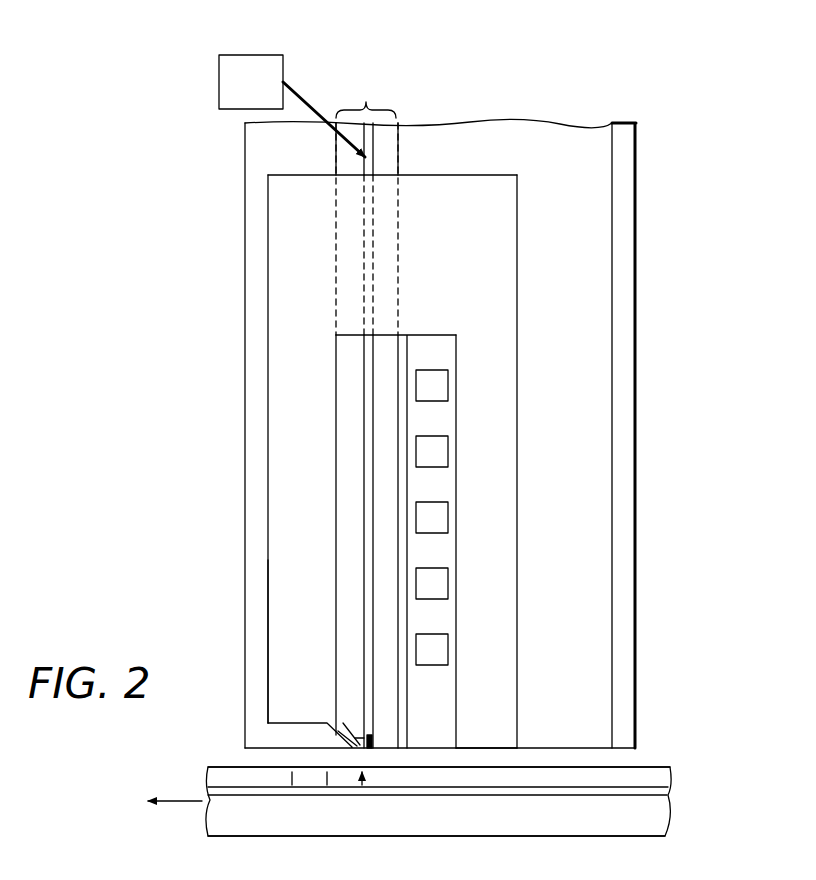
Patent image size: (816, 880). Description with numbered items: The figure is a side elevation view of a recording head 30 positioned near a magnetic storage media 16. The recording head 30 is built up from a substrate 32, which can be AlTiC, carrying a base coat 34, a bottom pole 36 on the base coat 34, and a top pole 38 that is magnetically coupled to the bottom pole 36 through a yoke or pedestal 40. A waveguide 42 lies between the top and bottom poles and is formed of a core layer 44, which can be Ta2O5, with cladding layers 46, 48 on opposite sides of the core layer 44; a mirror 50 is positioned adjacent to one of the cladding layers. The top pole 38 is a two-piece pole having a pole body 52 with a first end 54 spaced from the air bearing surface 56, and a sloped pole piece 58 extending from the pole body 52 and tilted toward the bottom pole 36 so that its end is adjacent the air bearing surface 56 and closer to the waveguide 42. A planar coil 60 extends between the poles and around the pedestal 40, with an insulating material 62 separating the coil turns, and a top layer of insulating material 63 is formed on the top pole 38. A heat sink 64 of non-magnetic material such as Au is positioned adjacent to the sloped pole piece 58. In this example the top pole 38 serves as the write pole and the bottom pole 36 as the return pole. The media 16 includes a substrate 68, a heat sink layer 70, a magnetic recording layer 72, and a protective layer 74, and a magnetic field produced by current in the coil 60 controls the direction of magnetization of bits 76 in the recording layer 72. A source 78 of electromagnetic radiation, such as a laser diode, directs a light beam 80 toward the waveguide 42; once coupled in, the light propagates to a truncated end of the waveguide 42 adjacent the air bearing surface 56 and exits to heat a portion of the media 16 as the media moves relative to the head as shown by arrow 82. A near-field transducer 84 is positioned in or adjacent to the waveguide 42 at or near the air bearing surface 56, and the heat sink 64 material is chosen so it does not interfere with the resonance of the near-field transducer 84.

The magnetic storage media 16 is at (676, 757).
The recording head 30 is at (202, 192).
The substrate 32 is at (623, 135).
The base coat 34 is at (568, 142).
The bottom pole 36 is at (508, 482).
The top pole 38 is at (268, 522).
The yoke or pedestal 40 is at (452, 185).
The waveguide 42 is at (367, 203).
The core layer 44 is at (373, 412).
The cladding layer 46 is at (381, 366).
The cladding layer 48 is at (350, 466).
The mirror 50 is at (400, 338).
The pole body 52 is at (280, 622).
The first end 54 is at (285, 735).
The air bearing surface 56 is at (438, 748).
The sloped pole piece 58 is at (352, 735).
The planar coil 60 is at (442, 522).
The insulating material 62 is at (452, 710).
The top layer of insulating material 63 is at (258, 262).
The heat sink 64 is at (360, 742).
The substrate 68 is at (618, 822).
The heat sink layer 70 is at (670, 792).
The magnetic recording layer 72 is at (660, 778).
The protective layer 74 is at (652, 765).
The bits 76 is at (282, 783).
The source of electromagnetic radiation 78 is at (218, 85).
The light beam 80 is at (312, 103).
The arrow 82 is at (180, 801).
The near-field transducer 84 is at (375, 743).